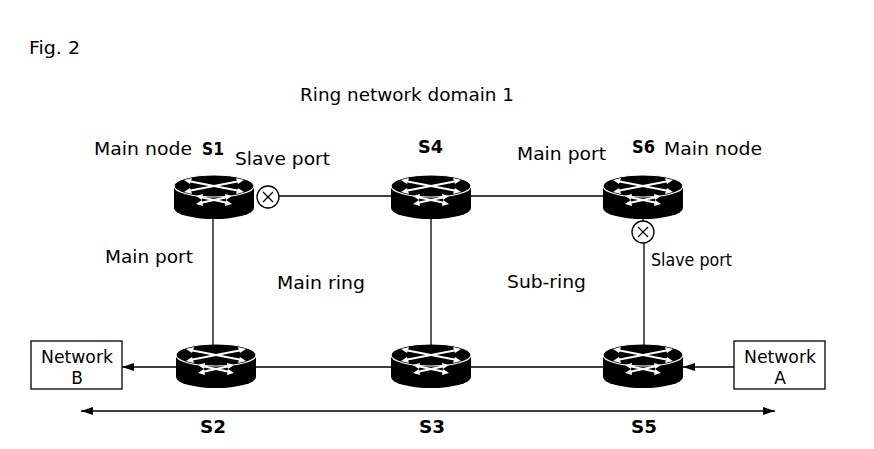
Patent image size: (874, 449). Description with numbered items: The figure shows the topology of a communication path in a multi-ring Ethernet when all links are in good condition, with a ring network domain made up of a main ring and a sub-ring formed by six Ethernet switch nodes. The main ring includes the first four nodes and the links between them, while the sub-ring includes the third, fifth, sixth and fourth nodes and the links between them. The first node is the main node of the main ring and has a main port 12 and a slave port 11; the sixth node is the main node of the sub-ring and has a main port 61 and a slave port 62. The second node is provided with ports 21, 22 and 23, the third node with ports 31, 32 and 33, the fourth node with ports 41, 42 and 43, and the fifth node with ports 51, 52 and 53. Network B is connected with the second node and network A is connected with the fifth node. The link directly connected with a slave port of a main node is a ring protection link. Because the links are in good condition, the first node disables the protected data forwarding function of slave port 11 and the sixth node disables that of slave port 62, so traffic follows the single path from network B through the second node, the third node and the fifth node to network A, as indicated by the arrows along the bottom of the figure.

The slave port 11 is at (296, 186).
The main port 12 is at (197, 250).
The port 21 is at (197, 313).
The port 22 is at (289, 384).
The port 23 is at (149, 377).
The port 31 is at (357, 384).
The port 32 is at (417, 313).
The port 33 is at (503, 384).
The port 41 is at (418, 250).
The port 42 is at (363, 181).
The port 43 is at (503, 181).
The port 51 is at (569, 384).
The port 52 is at (661, 319).
The port 53 is at (708, 377).
The main port 61 is at (569, 181).
The slave port 62 is at (654, 256).